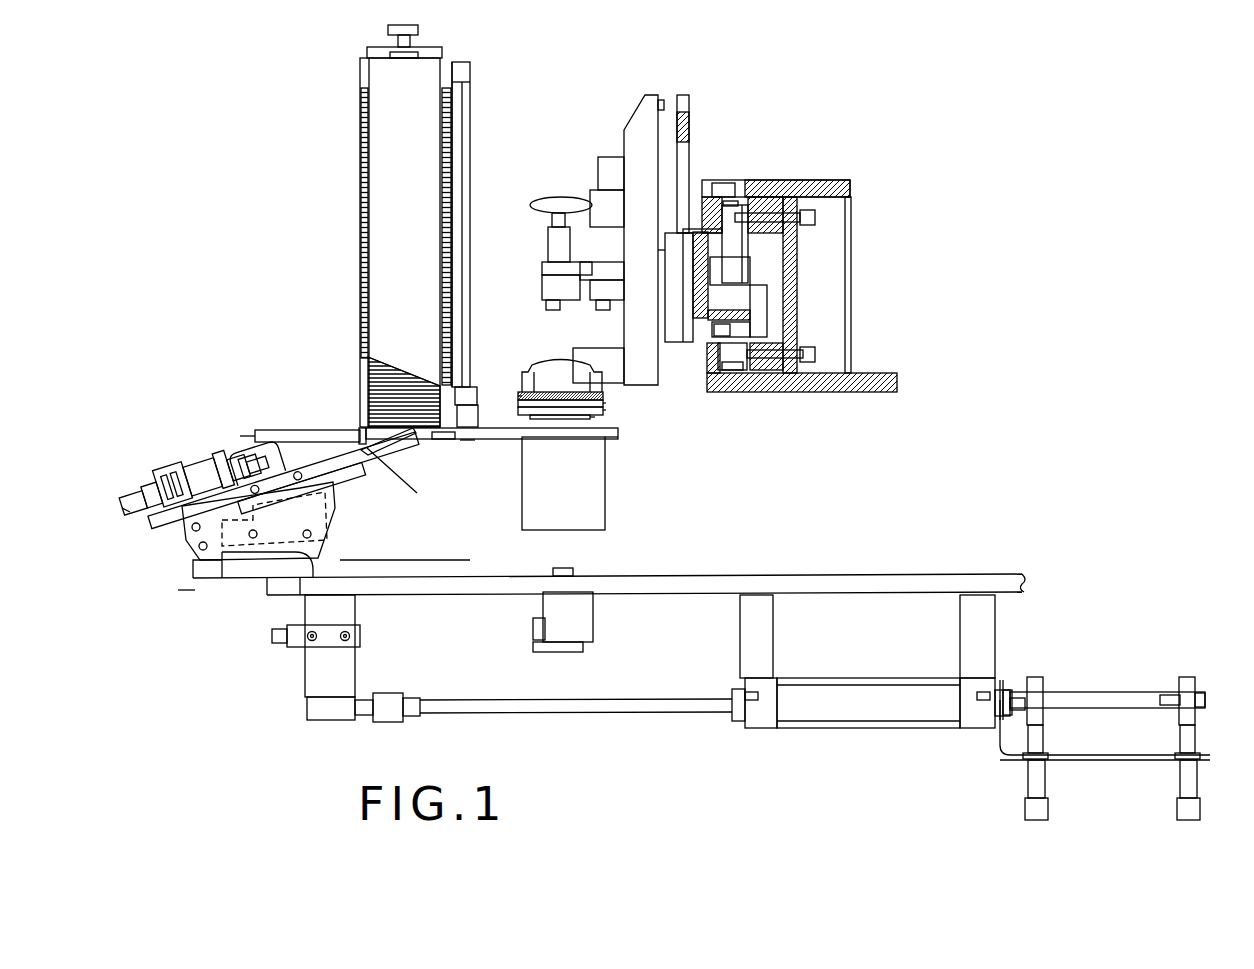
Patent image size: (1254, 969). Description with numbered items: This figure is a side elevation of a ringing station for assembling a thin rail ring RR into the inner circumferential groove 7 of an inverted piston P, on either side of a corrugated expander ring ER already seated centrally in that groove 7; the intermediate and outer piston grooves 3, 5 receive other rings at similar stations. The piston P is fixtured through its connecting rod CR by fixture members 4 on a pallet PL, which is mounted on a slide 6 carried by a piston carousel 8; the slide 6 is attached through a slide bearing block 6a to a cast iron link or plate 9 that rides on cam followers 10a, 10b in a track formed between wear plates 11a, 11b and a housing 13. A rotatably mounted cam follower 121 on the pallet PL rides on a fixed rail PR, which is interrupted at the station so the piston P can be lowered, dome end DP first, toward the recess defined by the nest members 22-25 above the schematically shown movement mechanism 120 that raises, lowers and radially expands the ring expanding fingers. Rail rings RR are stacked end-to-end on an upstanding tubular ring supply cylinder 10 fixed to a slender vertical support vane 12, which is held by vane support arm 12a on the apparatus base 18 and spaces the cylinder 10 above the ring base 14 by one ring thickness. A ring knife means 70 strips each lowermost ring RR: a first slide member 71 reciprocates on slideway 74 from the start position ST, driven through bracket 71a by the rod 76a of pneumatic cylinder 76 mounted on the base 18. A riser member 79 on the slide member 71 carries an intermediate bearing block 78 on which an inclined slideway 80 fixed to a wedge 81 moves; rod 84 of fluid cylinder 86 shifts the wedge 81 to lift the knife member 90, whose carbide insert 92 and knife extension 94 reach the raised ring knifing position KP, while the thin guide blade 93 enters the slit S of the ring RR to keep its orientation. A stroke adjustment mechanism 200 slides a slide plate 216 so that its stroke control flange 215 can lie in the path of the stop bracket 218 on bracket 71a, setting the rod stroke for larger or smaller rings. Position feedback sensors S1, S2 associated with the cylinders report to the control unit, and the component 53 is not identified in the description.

The ring supply cylinder 10 is at (362, 172).
The vertical support vane 12 is at (452, 144).
The vane support arm 12a is at (470, 287).
The rail ring RR is at (360, 210).
The slit S is at (456, 172).
The fixture members 4 is at (558, 200).
The connecting rod CR is at (560, 222).
The pallet PL is at (634, 126).
The cam follower 121 is at (683, 102).
The fixed rail PR is at (690, 110).
The slide 6 is at (687, 216).
The slide bearing block 6a is at (706, 186).
The piston carousel 8 is at (667, 262).
The cast iron link or plate 9 is at (728, 298).
The cam follower 10a is at (748, 357).
The cam follower 10b is at (738, 212).
The wear plate 11a is at (792, 388).
The wear plate 11b is at (760, 214).
The housing 13 is at (715, 392).
The piston P is at (548, 366).
The inner circumferential groove 7 is at (520, 395).
The ring base 14 is at (480, 428).
The corrugated expander ring ER is at (605, 393).
The intermediate piston groove 3 is at (603, 394).
The outer piston groove 5 is at (603, 403).
The dome end DP is at (603, 411).
The nest members 22-25 is at (618, 436).
The movement mechanism 120 is at (580, 505).
The knife extension 94 is at (256, 434).
The knife member 90 is at (268, 428).
The carbide insert 92 is at (362, 428).
The guide blade 93 is at (462, 442).
The ring knifing position KP is at (375, 449).
The slideway 80 is at (332, 486).
The wedge 81 is at (405, 483).
The rod 84 is at (186, 458).
The fluid cylinder 86 is at (150, 478).
The ring knife means 70 is at (249, 439).
The element 53 is at (122, 508).
The intermediate bearing block 78 is at (324, 514).
The riser member 79 is at (322, 540).
The slideway 74 is at (470, 565).
The first slide member 71 is at (236, 575).
The bracket 71a is at (312, 677).
The start position ST is at (178, 590).
The apparatus base 18 is at (1028, 592).
The stop bracket 218 is at (365, 637).
The stroke adjustment mechanism 200 is at (600, 631).
The stroke control flange 215 is at (533, 635).
The slide plate 216 is at (582, 650).
The pneumatic cylinder 76 is at (863, 705).
The rod 76a is at (570, 705).
The position feedback sensor S1 is at (1040, 822).
The position feedback sensor S2 is at (1193, 820).